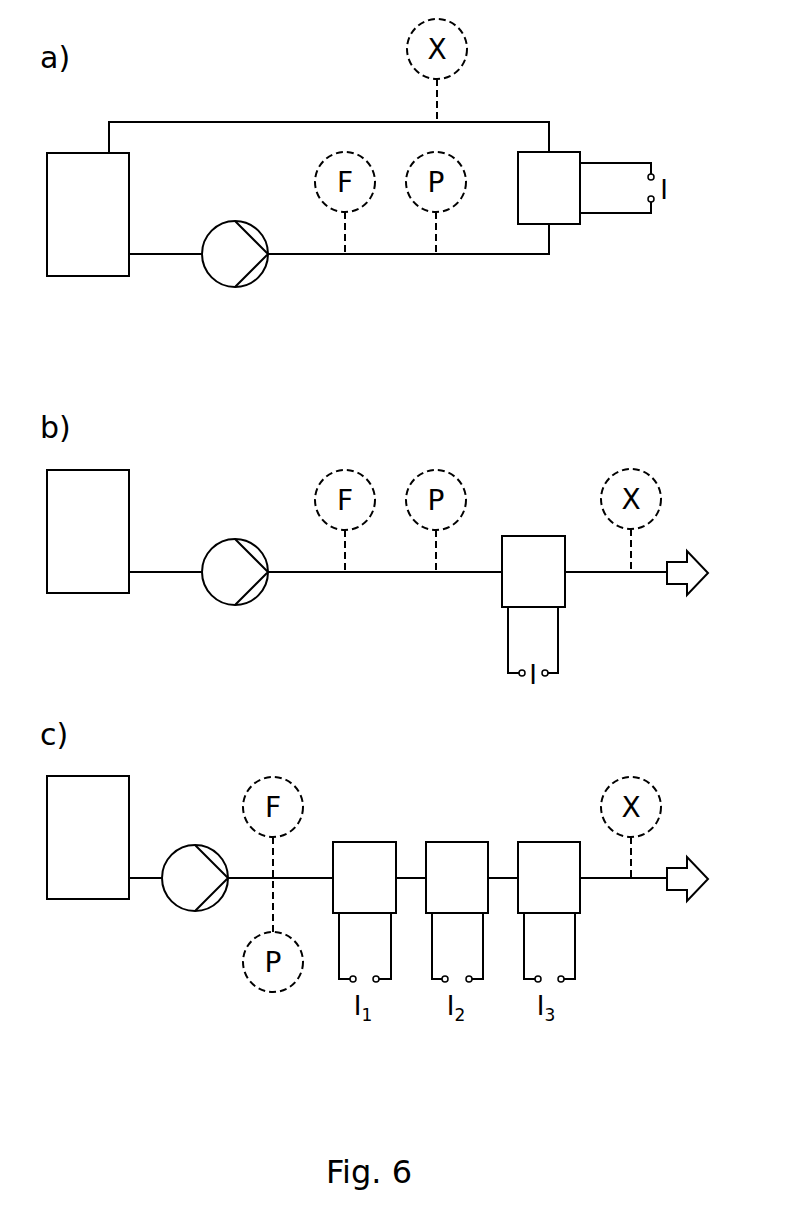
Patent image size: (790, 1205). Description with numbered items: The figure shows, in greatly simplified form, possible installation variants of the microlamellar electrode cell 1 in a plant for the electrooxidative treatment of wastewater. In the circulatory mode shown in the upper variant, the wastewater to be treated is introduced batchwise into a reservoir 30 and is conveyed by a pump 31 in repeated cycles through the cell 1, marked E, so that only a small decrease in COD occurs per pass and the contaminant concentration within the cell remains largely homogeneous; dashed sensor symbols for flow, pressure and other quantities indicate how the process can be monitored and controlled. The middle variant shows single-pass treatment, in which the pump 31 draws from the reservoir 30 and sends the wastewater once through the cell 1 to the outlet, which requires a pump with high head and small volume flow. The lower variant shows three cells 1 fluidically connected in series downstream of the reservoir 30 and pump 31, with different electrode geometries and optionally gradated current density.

The microlamellar electrode cell 1 is at (461, 515).
The reservoir 30 is at (88, 526).
The pump 31 is at (215, 585).